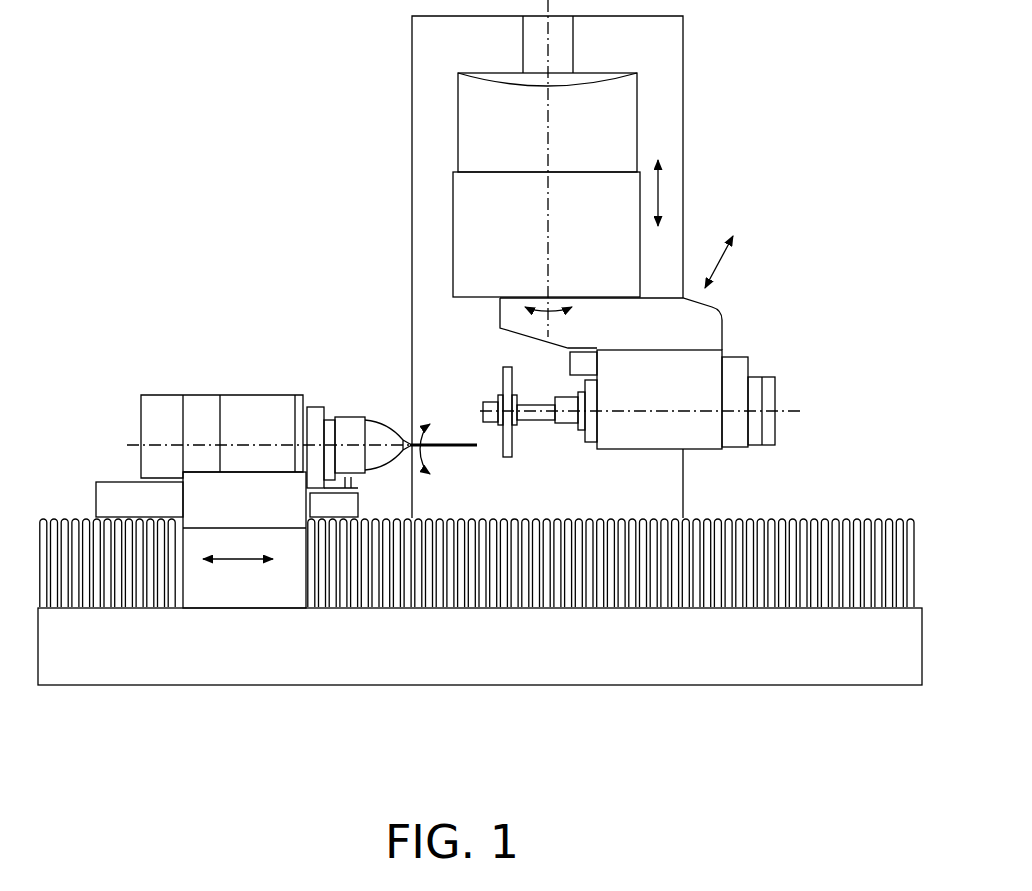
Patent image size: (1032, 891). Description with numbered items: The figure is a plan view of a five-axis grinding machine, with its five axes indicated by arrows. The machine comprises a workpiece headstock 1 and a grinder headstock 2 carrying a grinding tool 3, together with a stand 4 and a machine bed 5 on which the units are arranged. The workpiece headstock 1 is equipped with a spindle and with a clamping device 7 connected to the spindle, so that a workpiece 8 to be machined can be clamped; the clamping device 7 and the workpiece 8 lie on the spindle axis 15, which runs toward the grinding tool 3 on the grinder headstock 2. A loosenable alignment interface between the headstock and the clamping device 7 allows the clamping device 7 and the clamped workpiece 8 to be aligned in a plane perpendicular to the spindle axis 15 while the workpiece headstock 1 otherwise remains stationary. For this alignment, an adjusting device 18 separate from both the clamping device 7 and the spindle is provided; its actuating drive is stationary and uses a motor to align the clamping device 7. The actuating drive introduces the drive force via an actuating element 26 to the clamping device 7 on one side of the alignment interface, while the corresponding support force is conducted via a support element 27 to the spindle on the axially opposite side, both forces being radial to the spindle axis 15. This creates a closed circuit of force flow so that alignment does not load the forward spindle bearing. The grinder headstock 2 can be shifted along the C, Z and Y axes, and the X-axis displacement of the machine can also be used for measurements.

The workpiece headstock 1 is at (132, 351).
The grinder headstock 2 is at (751, 337).
The grinding tool 3 is at (502, 370).
The stand 4 is at (660, 82).
The machine bed 5 is at (807, 653).
The clamping device 7 is at (385, 423).
The workpiece 8 is at (462, 447).
The spindle axis 15 is at (252, 445).
The adjusting device 18 is at (332, 503).
The actuating element 26 is at (358, 488).
The support element 27 is at (337, 432).